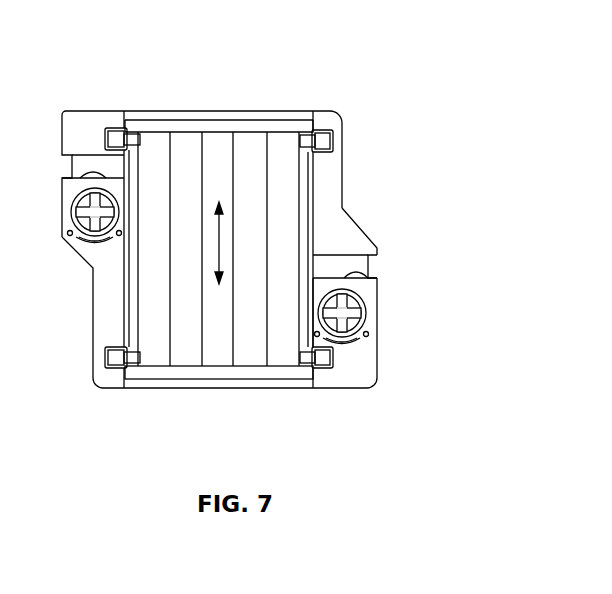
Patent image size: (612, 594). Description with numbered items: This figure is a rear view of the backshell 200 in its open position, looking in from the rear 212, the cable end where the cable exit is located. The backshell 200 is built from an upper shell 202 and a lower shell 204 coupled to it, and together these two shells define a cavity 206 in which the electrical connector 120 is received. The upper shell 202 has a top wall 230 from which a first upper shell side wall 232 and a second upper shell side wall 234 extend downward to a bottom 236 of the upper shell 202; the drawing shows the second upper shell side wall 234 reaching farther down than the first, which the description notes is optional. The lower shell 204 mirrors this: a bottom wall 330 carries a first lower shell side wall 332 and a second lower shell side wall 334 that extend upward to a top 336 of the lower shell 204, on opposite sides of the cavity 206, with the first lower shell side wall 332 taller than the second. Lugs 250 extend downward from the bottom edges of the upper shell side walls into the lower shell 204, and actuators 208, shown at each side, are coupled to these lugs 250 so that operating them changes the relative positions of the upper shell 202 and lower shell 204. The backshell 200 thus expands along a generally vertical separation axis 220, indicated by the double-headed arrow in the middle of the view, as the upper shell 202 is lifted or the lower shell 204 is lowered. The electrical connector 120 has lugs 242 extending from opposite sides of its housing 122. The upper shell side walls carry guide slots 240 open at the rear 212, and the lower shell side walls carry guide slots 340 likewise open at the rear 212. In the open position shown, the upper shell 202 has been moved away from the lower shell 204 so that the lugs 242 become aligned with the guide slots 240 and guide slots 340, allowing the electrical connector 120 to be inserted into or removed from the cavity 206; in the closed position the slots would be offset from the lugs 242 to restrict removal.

The backshell 200 is at (92, 98).
The top wall 230 is at (155, 111).
The first upper shell side wall 232 is at (72, 133).
The first lower shell side wall 332 is at (107, 295).
The upper shell 202 is at (335, 165).
The second upper shell side wall 234 is at (335, 188).
The bottom of the upper shell 236 is at (368, 262).
The lower shell 204 is at (365, 355).
The second lower shell side wall 334 is at (377, 333).
The lugs 250 is at (83, 163).
The top of the lower shell 336 is at (82, 178).
The actuators 208 is at (83, 223).
The housing 122 is at (307, 217).
The rear 212 is at (188, 118).
The cavity 206 is at (249, 120).
The bottom wall 330 is at (233, 383).
The electrical connector 120 is at (183, 352).
The separation axis 220 is at (218, 243).
The guide slots 240 is at (117, 117).
The guide slots 340 is at (90, 363).
The lugs 242 is at (110, 137).